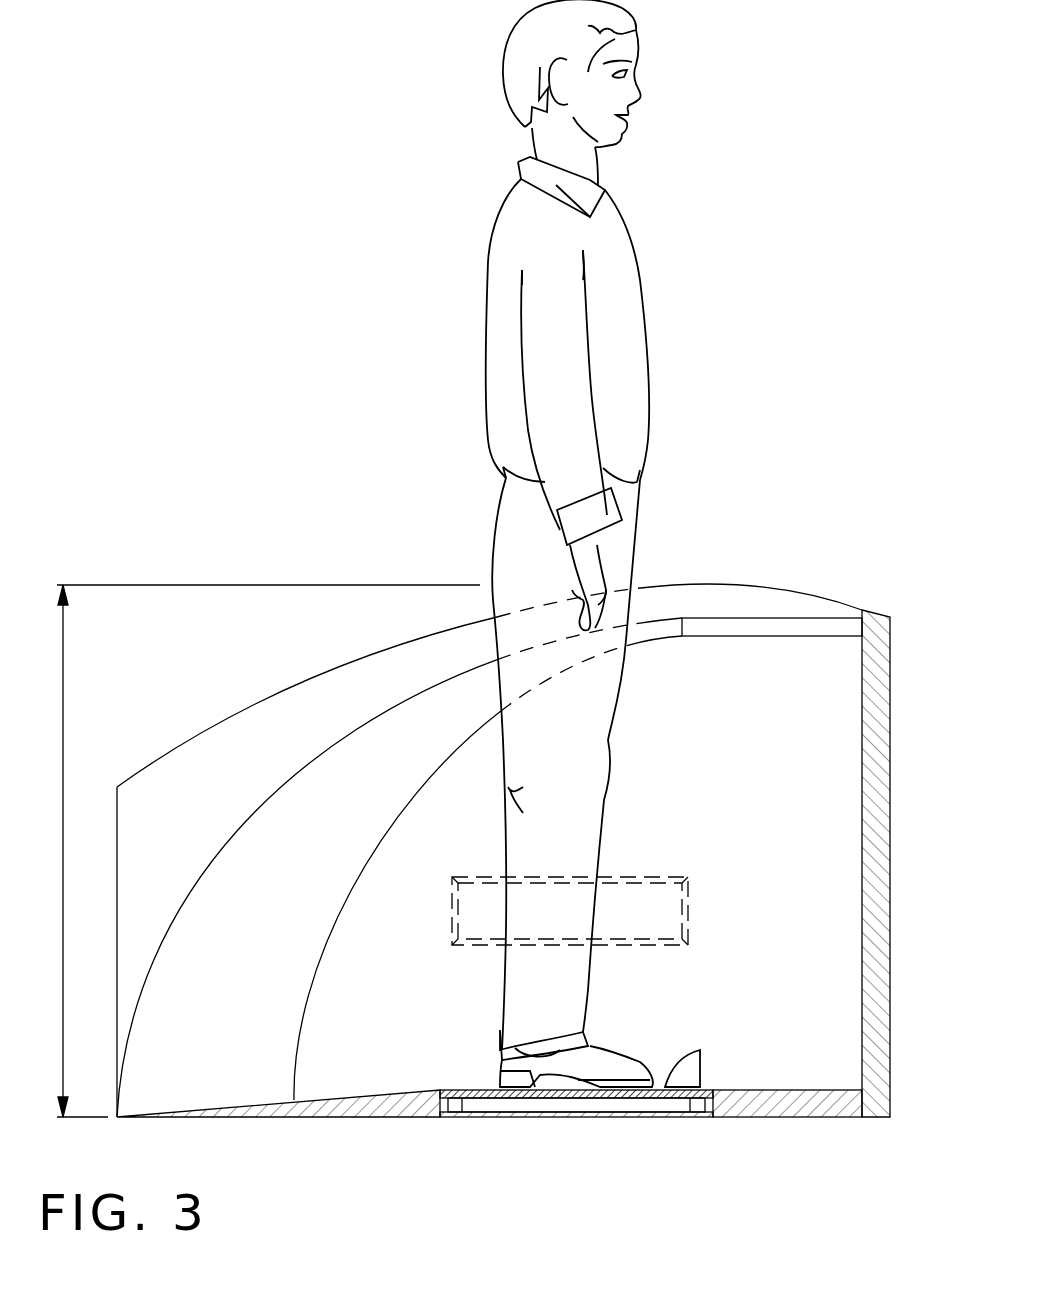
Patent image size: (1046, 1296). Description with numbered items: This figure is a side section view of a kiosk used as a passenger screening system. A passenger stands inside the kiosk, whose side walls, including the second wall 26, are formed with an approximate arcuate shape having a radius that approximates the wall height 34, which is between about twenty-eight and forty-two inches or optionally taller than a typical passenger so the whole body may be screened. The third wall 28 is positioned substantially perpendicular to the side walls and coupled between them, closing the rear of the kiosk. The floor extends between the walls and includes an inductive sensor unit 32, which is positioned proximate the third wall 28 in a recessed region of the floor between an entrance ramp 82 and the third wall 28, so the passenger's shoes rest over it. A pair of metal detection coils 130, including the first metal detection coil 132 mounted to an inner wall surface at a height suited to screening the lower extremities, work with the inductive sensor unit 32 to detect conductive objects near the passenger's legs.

The second wall 26 is at (741, 777).
The third wall 28 is at (888, 1090).
The inductive sensor unit 32 is at (672, 1090).
The height 34 is at (63, 680).
The entrance ramp 82 is at (388, 1105).
The metal detection coils 130 is at (638, 865).
The first metal detection coil 132 is at (493, 920).